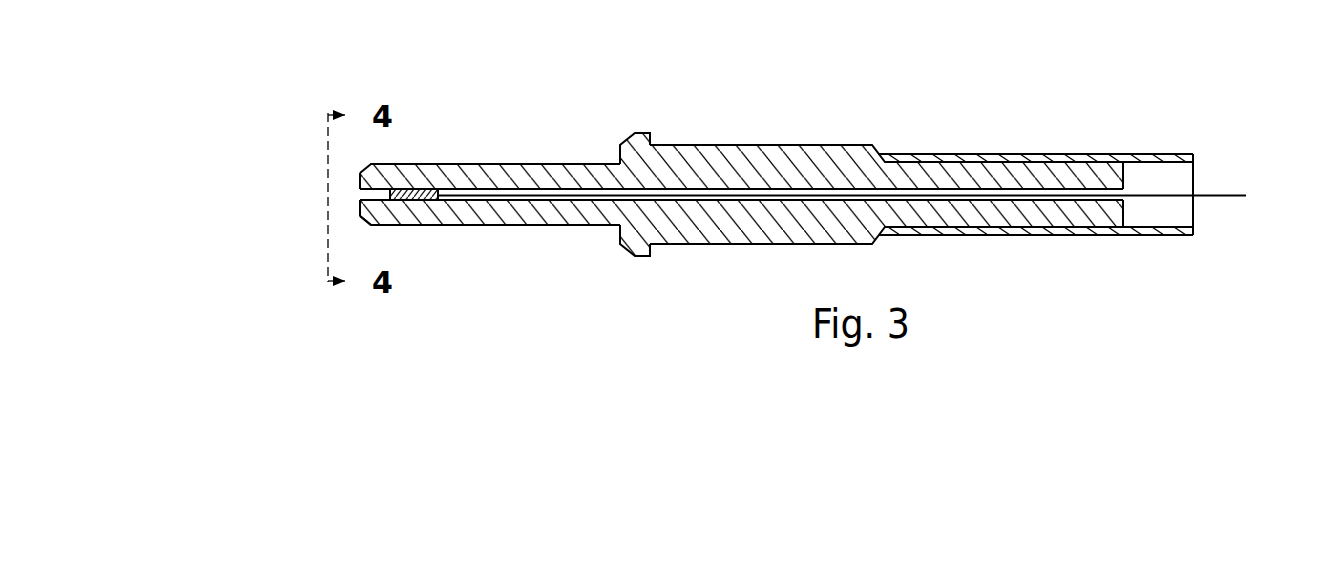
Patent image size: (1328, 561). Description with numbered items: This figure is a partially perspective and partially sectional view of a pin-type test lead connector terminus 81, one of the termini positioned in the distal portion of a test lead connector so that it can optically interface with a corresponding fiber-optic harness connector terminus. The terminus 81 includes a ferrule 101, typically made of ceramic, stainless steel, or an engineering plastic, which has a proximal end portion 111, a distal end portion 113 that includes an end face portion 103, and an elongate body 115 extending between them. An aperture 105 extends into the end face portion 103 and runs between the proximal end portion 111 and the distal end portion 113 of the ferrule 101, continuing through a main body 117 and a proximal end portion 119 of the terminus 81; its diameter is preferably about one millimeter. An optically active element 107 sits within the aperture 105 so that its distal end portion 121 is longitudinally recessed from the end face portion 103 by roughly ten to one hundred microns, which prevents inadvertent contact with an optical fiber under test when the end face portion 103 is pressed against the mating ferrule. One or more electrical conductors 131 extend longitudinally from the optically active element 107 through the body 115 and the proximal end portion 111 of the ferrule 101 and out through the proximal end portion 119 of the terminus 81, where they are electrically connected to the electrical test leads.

The pin-type test lead connector terminus 81 is at (1210, 44).
The ferrule 101 is at (548, 260).
The end face portion 103 is at (360, 206).
The aperture 105 is at (373, 196).
The optically active element 107 is at (412, 204).
The proximal end portion 111 is at (648, 93).
The distal end portion 113 is at (312, 141).
The elongate body 115 is at (508, 118).
The main body 117 is at (785, 118).
The proximal end portion 119 is at (1045, 118).
The distal end portion 121 is at (400, 187).
The electrical conductors 131 is at (1237, 192).